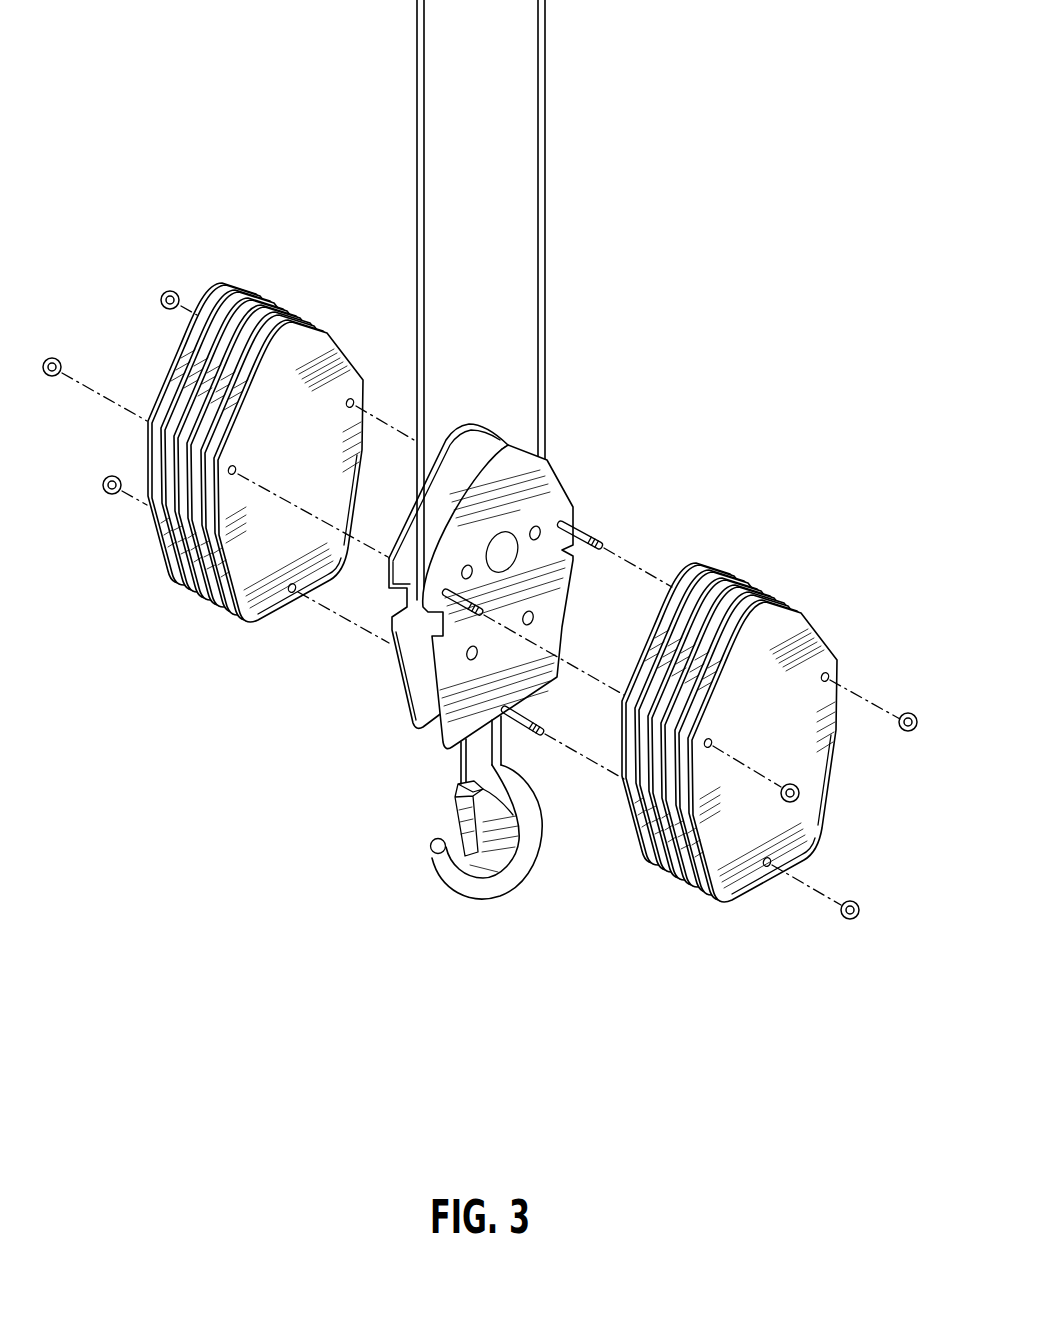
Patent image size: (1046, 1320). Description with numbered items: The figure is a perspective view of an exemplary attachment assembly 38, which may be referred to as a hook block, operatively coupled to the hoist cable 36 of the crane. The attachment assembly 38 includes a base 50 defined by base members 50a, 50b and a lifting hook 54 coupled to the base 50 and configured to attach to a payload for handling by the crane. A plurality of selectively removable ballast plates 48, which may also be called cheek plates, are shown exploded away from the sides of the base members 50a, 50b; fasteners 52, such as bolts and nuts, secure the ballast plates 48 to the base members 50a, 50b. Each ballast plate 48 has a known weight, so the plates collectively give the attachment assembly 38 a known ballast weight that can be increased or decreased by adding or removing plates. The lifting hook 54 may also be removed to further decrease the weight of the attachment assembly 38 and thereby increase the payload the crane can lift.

The hoist cable 36 is at (545, 268).
The attachment assembly 38 is at (271, 796).
The ballast plates 48 is at (338, 360).
The base 50 is at (397, 701).
The base member 50a is at (553, 491).
The base member 50b is at (483, 437).
The fasteners 52 is at (602, 521).
The lifting hook 54 is at (510, 879).